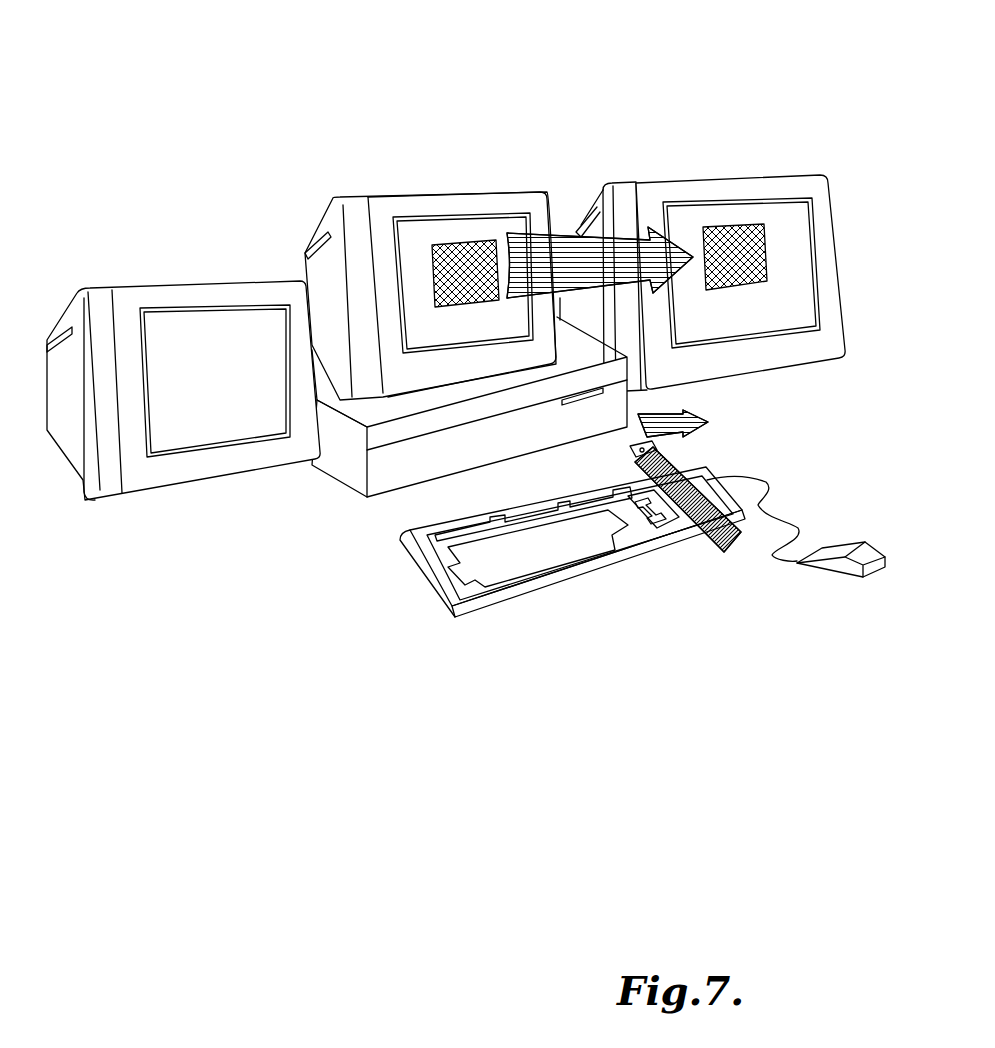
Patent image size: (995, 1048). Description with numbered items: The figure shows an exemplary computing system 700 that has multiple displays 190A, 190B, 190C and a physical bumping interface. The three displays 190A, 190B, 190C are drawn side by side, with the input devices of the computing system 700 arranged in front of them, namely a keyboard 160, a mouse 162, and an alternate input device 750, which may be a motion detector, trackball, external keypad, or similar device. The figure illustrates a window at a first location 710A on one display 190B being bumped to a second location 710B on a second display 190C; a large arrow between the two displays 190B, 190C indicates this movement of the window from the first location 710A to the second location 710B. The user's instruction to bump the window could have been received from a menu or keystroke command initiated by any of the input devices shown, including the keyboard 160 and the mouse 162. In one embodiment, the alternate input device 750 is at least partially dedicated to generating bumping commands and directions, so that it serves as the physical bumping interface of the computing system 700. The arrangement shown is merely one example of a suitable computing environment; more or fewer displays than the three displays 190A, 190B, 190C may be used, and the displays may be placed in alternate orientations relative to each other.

The computing system 700 is at (465, 91).
The display 190A is at (190, 284).
The display 190B is at (546, 189).
The display 190C is at (705, 179).
The first location 710A is at (433, 243).
The second location 710B is at (733, 228).
The alternate input device 750 is at (667, 443).
The keyboard 160 is at (592, 578).
The mouse 162 is at (836, 573).